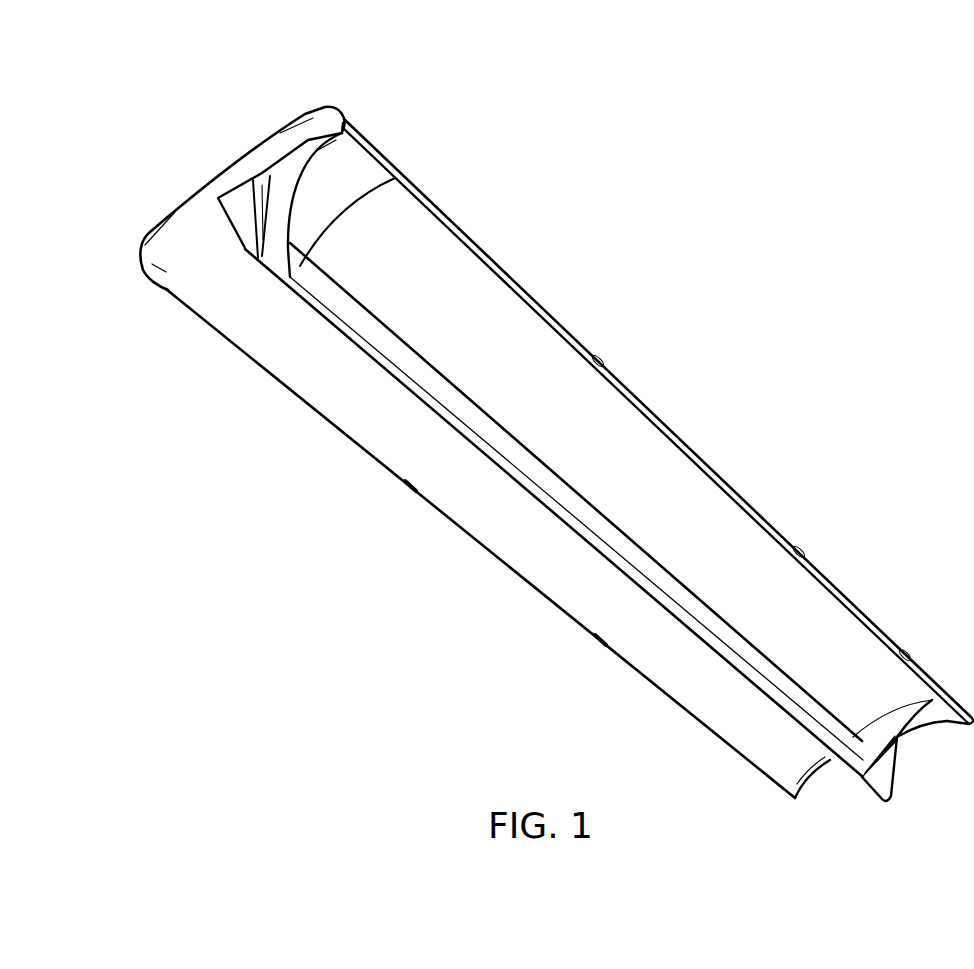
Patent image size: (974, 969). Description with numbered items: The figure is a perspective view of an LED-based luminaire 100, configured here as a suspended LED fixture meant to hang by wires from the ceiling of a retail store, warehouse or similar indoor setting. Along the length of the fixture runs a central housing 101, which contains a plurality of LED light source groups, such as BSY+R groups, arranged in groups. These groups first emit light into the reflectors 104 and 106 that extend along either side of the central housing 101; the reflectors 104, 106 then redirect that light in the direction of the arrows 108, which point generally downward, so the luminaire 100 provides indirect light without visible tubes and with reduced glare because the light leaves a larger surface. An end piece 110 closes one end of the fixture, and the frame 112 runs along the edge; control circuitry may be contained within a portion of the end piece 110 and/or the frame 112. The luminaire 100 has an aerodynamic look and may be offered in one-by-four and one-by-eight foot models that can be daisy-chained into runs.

The LED-based luminaire 100 is at (709, 166).
The central housing 101 is at (300, 268).
The reflector 104 is at (578, 608).
The reflector 106 is at (740, 526).
The arrows 108 is at (358, 366).
The end piece 110 is at (328, 105).
The frame 112 is at (470, 234).